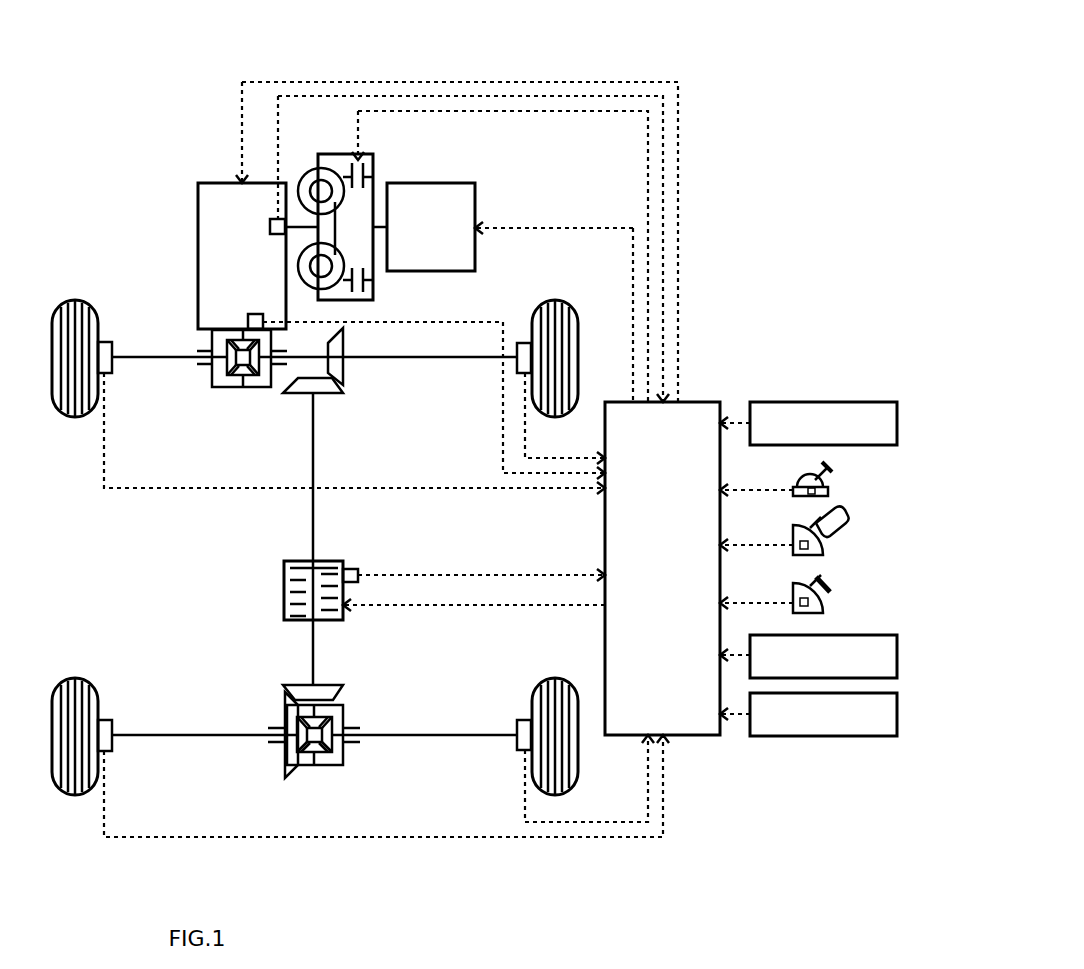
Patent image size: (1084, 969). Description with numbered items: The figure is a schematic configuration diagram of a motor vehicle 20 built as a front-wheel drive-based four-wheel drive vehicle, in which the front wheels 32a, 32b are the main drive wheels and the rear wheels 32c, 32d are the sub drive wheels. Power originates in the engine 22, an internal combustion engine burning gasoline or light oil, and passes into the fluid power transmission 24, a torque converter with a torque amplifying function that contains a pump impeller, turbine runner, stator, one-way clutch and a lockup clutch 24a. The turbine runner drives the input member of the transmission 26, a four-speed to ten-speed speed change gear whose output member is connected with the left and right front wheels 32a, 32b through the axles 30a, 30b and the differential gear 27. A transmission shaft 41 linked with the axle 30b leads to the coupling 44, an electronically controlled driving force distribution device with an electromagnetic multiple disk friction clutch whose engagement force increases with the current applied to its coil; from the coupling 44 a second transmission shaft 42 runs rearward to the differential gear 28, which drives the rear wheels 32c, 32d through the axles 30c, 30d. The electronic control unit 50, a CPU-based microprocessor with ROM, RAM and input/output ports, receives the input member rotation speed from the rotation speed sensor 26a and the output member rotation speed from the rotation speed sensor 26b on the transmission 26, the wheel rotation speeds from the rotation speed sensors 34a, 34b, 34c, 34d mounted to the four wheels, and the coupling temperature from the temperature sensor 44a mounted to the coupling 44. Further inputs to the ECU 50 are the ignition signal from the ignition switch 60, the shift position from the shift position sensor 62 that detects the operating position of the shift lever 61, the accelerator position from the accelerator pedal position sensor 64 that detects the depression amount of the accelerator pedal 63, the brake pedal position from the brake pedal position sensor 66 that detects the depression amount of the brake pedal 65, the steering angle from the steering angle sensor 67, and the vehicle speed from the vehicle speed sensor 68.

The motor vehicle 20 is at (473, 52).
The engine 22 is at (431, 183).
The fluid power transmission 24 is at (307, 165).
The lockup clutch 24a is at (363, 289).
The transmission 26 is at (212, 183).
The rotation speed sensor 26a is at (270, 226).
The rotation speed sensor 26b is at (248, 320).
The differential gear 27 is at (235, 392).
The differential gear 28 is at (318, 770).
The axle 30a is at (155, 357).
The axle 30b is at (430, 358).
The axle 30c is at (170, 735).
The axle 30d is at (445, 735).
The front wheel 32a is at (75, 300).
The front wheel 32b is at (555, 300).
The rear wheel 32c is at (75, 678).
The rear wheel 32d is at (556, 678).
The rotation speed sensor 34a is at (105, 342).
The rotation speed sensor 34b is at (522, 343).
The rotation speed sensor 34c is at (105, 720).
The rotation speed sensor 34d is at (523, 720).
The transmission shaft 41 is at (315, 453).
The transmission shaft 42 is at (315, 656).
The coupling 44 is at (300, 561).
The temperature sensor 44a is at (350, 569).
The electronic control unit 50 is at (700, 402).
The ignition switch 60 is at (897, 424).
The shift lever 61 is at (837, 478).
The shift position sensor 62 is at (829, 490).
The accelerator pedal 63 is at (837, 532).
The accelerator pedal position sensor 64 is at (820, 545).
The brake pedal 65 is at (831, 593).
The brake pedal position sensor 66 is at (820, 603).
The steering angle sensor 67 is at (897, 653).
The vehicle speed sensor 68 is at (897, 712).